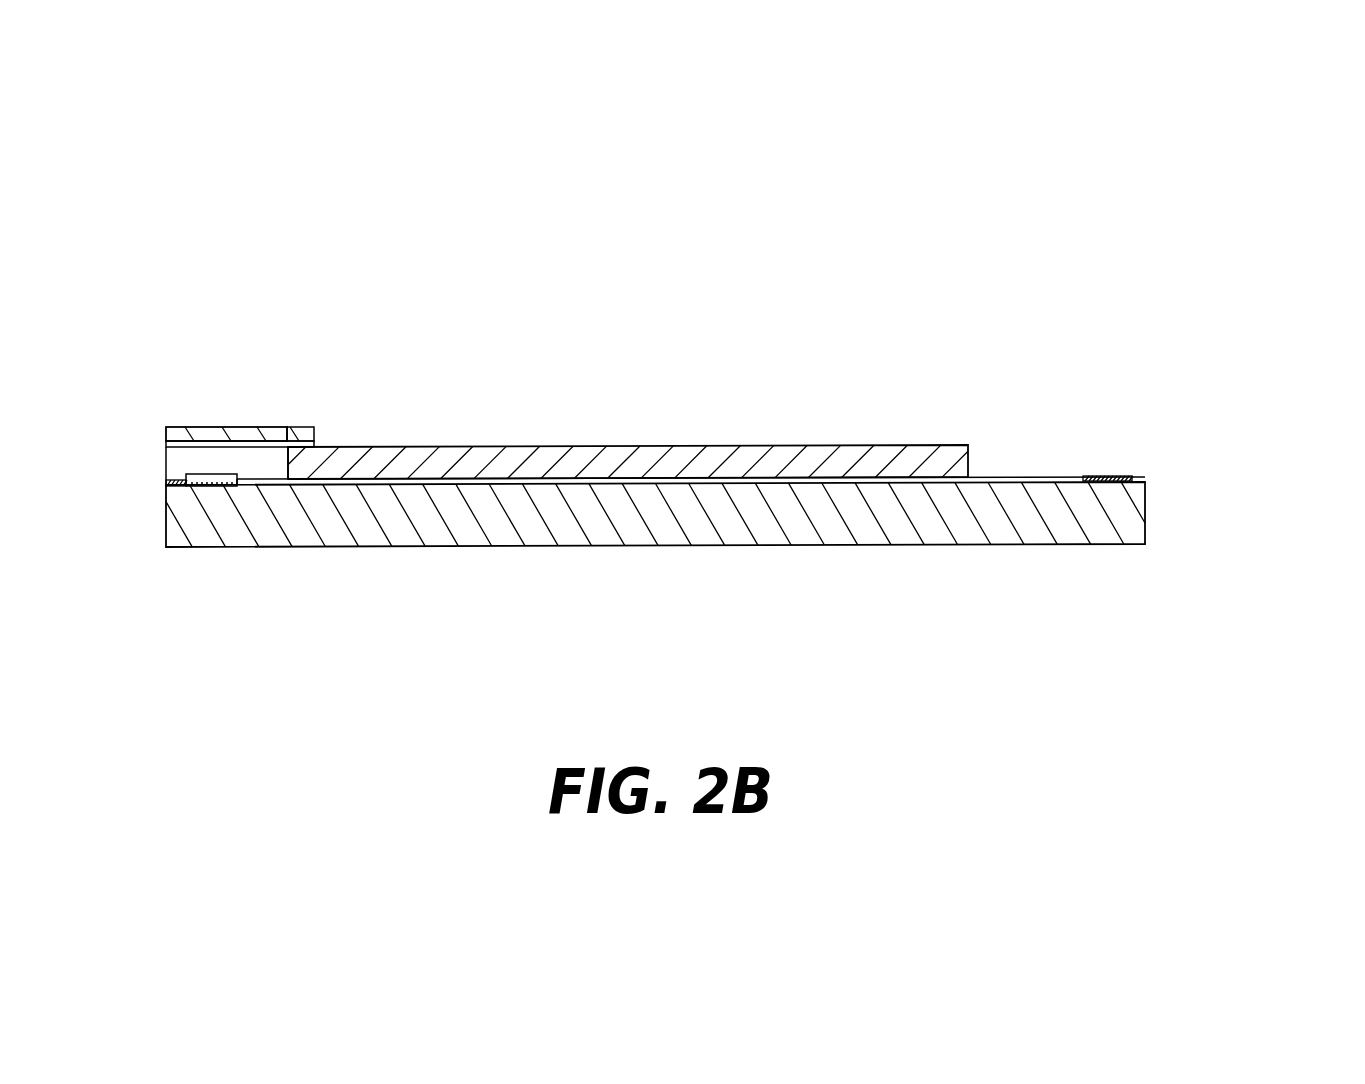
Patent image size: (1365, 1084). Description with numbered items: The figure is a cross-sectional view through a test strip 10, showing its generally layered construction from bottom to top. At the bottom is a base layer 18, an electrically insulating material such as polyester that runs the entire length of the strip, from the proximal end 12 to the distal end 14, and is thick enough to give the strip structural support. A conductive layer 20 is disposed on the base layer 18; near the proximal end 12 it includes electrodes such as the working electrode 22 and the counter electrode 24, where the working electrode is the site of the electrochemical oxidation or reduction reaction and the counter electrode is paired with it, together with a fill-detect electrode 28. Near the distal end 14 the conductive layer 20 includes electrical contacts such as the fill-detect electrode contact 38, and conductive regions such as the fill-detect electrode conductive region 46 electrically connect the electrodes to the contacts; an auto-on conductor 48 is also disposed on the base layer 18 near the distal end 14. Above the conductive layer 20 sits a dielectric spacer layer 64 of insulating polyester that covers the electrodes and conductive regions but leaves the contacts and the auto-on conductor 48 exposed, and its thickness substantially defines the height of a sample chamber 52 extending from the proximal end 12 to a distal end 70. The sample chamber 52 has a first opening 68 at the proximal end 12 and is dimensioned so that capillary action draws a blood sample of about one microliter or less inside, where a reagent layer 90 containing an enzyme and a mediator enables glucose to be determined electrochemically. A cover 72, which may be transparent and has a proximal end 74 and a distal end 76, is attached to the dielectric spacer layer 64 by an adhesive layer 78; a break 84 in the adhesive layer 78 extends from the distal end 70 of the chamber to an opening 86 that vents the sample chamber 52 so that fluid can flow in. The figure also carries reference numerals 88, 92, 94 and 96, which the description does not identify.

The test strip 10 is at (612, 318).
The proximal end 12 is at (96, 621).
The distal end 14 is at (1260, 488).
The base layer 18 is at (884, 562).
The conductive layer 20 is at (1150, 459).
The working electrode 22 is at (210, 487).
The counter electrode 24 is at (175, 485).
The fill-detect electrode 28 is at (280, 484).
The fill-detect electrode contact 38 is at (1075, 475).
The fill-detect electrode conductive region 46 is at (750, 482).
The auto-on conductor 48 is at (1117, 475).
The sample chamber 52 is at (112, 474).
The dielectric spacer layer 64 is at (690, 428).
The first opening 68 is at (110, 451).
The distal end of sample chamber 70 is at (287, 467).
The cover 72 is at (261, 412).
The proximal end of cover 74 is at (164, 433).
The distal end of cover 76 is at (315, 433).
The adhesive layer 78 is at (165, 447).
The break in adhesive layer 84 is at (287, 429).
The opening 86 is at (315, 444).
The substrate edge 88 is at (131, 509).
The reagent layer 90 is at (213, 482).
The cover plate edge 92 is at (970, 462).
The exposed region 94 is at (1090, 333).
The cover region 96 is at (930, 383).